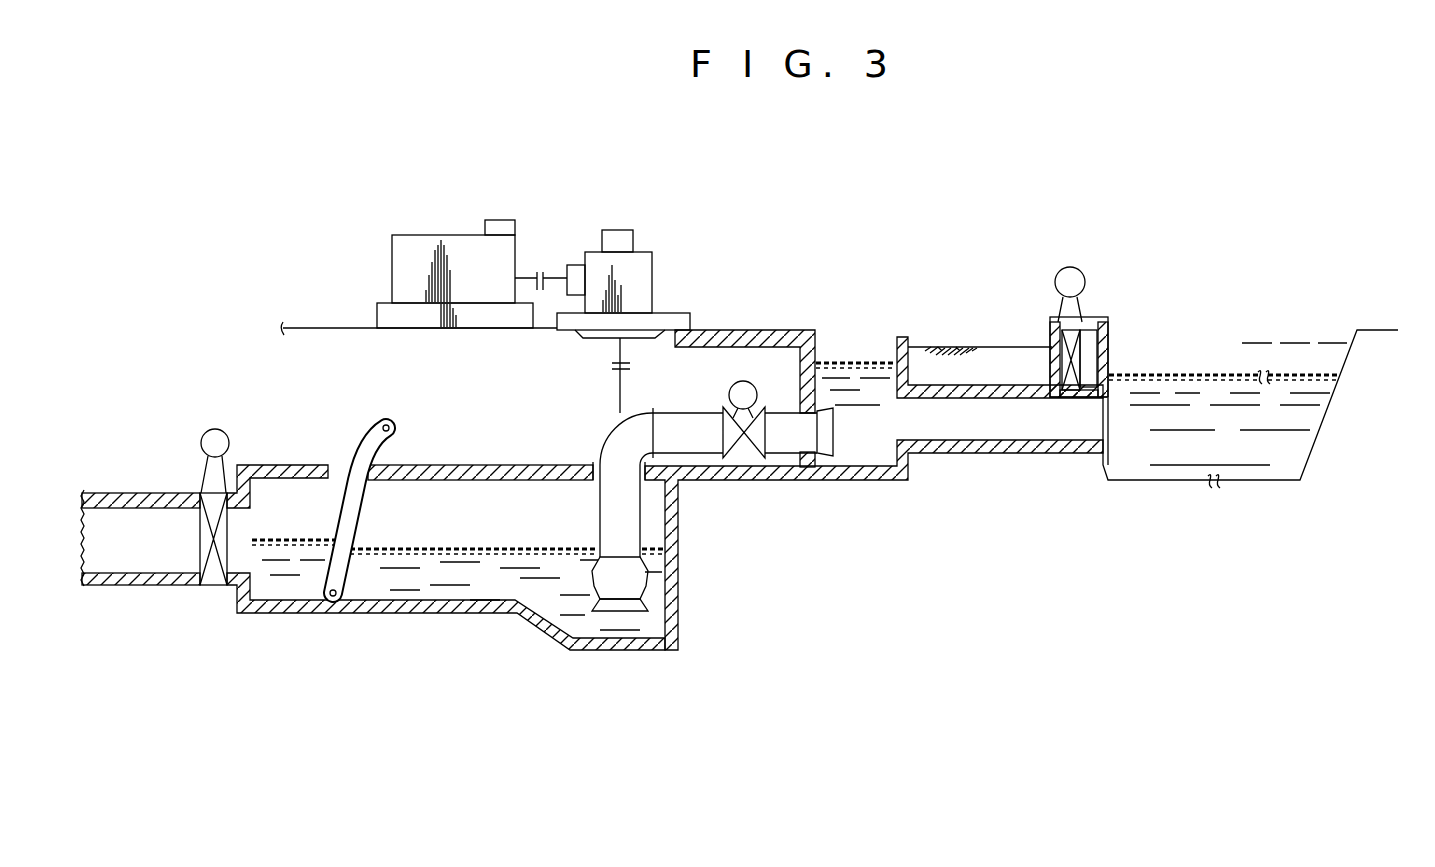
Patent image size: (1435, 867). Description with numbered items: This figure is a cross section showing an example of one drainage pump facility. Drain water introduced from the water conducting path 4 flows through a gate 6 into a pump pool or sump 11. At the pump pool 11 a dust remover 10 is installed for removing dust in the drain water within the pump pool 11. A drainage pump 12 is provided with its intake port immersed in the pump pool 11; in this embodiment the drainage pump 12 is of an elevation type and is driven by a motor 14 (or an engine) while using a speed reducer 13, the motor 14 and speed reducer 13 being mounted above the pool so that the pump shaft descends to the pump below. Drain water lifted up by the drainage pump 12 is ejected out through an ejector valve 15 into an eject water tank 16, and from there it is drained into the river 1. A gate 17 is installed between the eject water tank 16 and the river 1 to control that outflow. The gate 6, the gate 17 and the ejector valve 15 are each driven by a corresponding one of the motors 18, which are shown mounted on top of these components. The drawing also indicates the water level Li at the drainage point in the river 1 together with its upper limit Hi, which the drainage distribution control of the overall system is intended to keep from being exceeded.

The river 1 is at (1170, 482).
The water conducting path 4 is at (140, 559).
The gate 6 is at (213, 590).
The dust remover 10 is at (358, 433).
The pump pool 11 is at (428, 596).
The drainage pump 12 is at (636, 578).
The speed reducer 13 is at (653, 272).
The motor 14 is at (450, 238).
The ejector valve 15 is at (745, 462).
The eject water tank 16 is at (866, 450).
The gate 17 is at (1100, 343).
The motor 18 is at (201, 443).